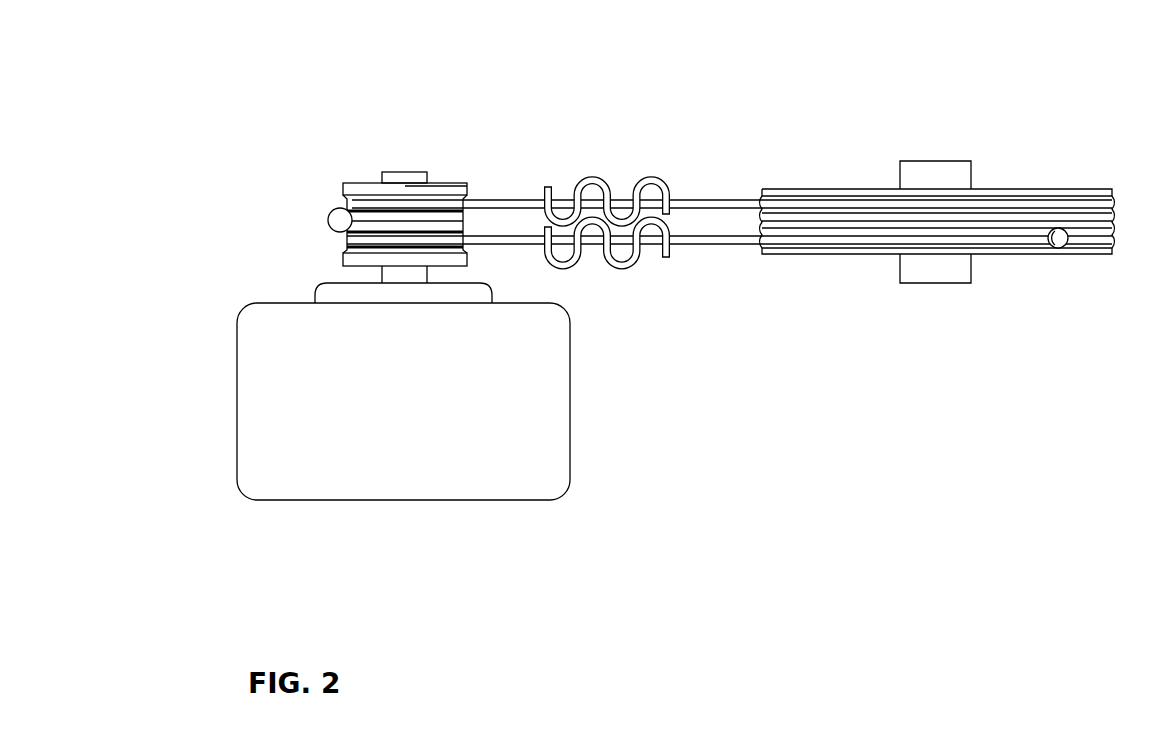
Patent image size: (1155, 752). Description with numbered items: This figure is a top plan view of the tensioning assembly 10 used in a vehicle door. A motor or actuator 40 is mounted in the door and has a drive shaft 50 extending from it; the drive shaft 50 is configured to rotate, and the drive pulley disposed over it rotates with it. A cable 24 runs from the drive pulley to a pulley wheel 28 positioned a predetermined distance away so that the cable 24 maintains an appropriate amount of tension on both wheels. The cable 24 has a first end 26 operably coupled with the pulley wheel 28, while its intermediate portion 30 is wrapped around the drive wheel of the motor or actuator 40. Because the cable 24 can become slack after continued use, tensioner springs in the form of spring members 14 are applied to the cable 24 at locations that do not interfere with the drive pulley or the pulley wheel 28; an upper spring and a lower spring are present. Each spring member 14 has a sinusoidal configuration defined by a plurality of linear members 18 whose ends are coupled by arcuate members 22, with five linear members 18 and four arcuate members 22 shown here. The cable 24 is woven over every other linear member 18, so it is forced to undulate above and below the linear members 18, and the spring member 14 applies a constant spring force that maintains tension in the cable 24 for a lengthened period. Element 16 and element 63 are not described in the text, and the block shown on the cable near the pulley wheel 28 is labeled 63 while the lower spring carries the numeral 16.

The tensioning assembly 10 is at (854, 88).
The spring member 14 is at (617, 140).
The second clip member 16 is at (581, 265).
The linear member 18 is at (544, 186).
The arcuate member 22 is at (586, 177).
The cable 24 is at (712, 246).
The first end 26 is at (1062, 248).
The pulley wheel 28 is at (1063, 189).
The intermediate portion 30 is at (717, 199).
The motor or actuator 40 is at (403, 483).
The drive shaft 50 is at (388, 172).
The mounting block 63 is at (942, 172).